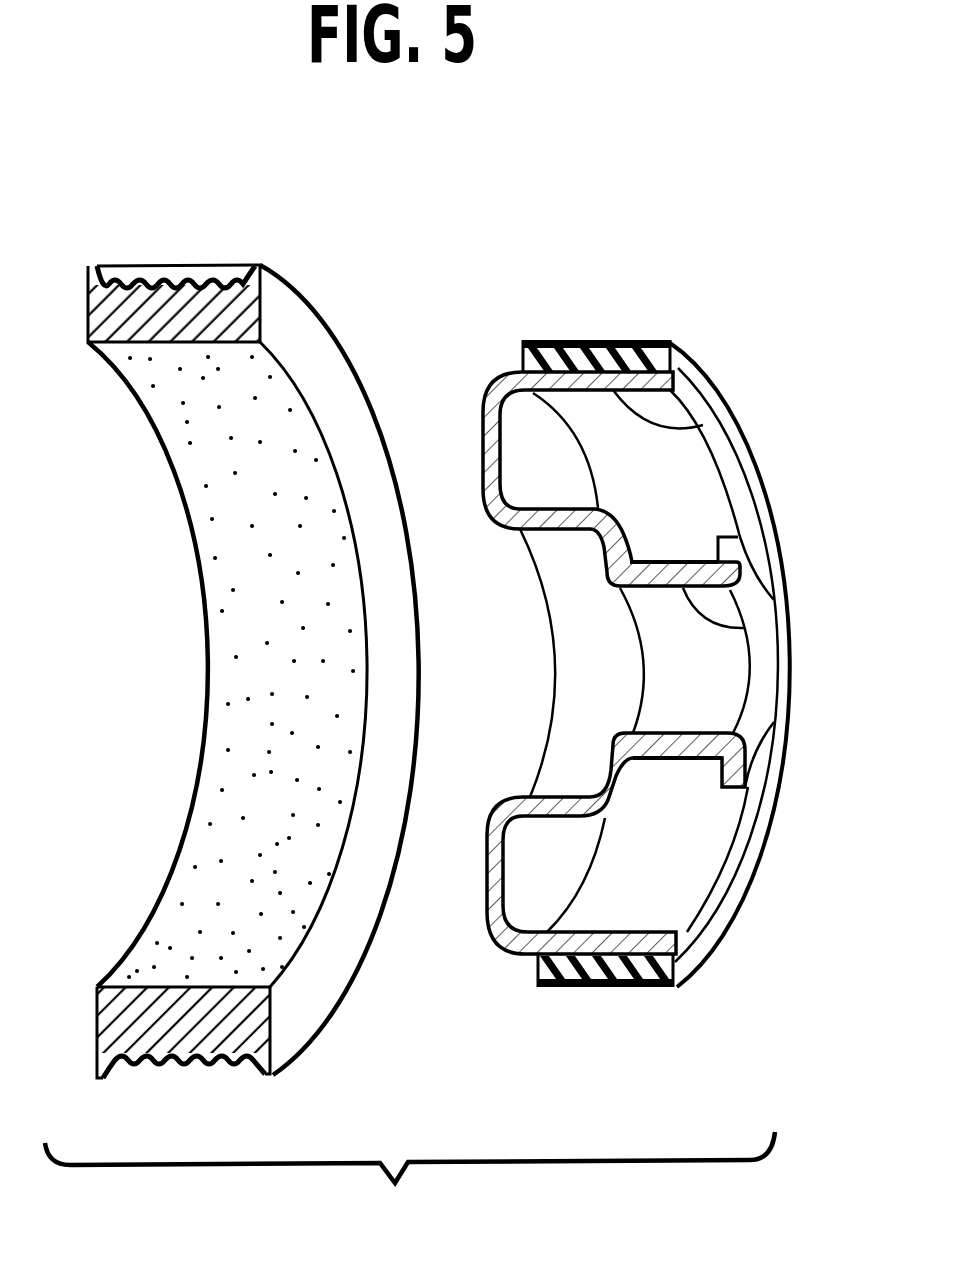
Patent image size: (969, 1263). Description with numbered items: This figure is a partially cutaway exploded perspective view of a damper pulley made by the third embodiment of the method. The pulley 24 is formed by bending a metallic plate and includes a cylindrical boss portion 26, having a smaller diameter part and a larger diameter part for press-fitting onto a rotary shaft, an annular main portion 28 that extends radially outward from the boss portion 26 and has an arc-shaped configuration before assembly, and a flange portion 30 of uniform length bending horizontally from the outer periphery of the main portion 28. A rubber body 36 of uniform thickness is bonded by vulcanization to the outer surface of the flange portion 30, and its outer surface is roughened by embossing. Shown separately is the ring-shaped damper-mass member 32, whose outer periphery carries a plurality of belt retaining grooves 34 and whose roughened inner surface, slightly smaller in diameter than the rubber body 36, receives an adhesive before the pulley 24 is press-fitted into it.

The pulley 24 is at (637, 661).
The cylindrical boss portion 26 is at (745, 628).
The annular main portion 28 is at (490, 450).
The flange portion 30 is at (703, 425).
The damper-mass member 32 is at (208, 284).
The belt retaining grooves 34 is at (132, 283).
The rubber body 36 is at (610, 340).